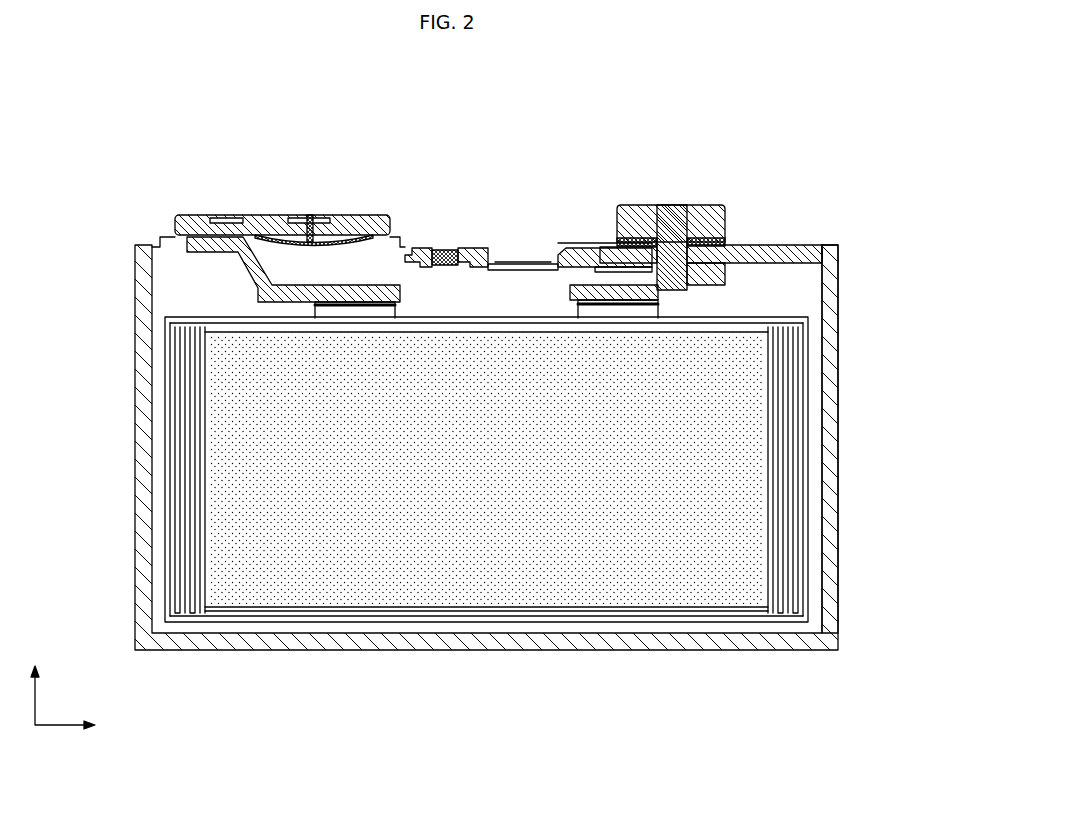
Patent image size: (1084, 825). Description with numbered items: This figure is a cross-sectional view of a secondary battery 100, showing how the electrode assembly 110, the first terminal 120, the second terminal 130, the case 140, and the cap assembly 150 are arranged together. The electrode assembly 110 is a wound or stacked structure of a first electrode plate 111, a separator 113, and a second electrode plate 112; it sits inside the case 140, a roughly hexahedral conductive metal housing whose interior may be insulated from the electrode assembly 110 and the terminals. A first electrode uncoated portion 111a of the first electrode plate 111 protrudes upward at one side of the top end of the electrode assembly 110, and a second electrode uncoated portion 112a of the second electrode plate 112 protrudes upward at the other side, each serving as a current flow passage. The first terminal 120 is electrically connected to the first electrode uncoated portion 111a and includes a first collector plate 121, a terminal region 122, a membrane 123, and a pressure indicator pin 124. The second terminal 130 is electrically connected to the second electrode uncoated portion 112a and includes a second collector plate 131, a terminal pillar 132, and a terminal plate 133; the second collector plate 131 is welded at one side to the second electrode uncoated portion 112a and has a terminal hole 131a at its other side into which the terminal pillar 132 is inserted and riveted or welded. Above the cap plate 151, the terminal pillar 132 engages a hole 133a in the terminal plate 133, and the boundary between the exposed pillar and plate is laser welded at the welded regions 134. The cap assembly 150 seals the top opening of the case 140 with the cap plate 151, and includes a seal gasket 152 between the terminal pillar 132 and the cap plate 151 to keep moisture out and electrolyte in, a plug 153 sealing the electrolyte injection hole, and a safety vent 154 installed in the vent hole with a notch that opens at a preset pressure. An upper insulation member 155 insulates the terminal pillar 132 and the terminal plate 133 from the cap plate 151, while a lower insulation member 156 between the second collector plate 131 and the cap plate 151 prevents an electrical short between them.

The secondary battery 100 is at (900, 127).
The electrode assembly 110 is at (580, 624).
The first electrode plate 111 is at (204, 373).
The first electrode uncoated portion 111a is at (326, 310).
The second electrode plate 112 is at (774, 373).
The second electrode uncoated portion 112a is at (660, 312).
The separator 113 is at (385, 623).
The first terminal 120 is at (198, 147).
The first collector plate 121 is at (366, 286).
The terminal region 122 is at (196, 215).
The membrane 123 is at (321, 217).
The pressure indicator pin 124 is at (306, 240).
The second terminal 130 is at (865, 167).
The second collector plate 131 is at (750, 246).
The terminal hole 131a is at (686, 294).
The terminal pillar 132 is at (727, 272).
The terminal plate 133 is at (728, 236).
The hole 133a is at (716, 206).
The welded regions 134 is at (684, 206).
The case 140 is at (838, 443).
The cap assembly 150 is at (432, 147).
The cap plate 151 is at (570, 258).
The seal gasket 152 is at (606, 245).
The plug 153 is at (444, 252).
The safety vent 154 is at (512, 264).
The upper insulation member 155 is at (603, 265).
The lower insulation member 156 is at (543, 262).